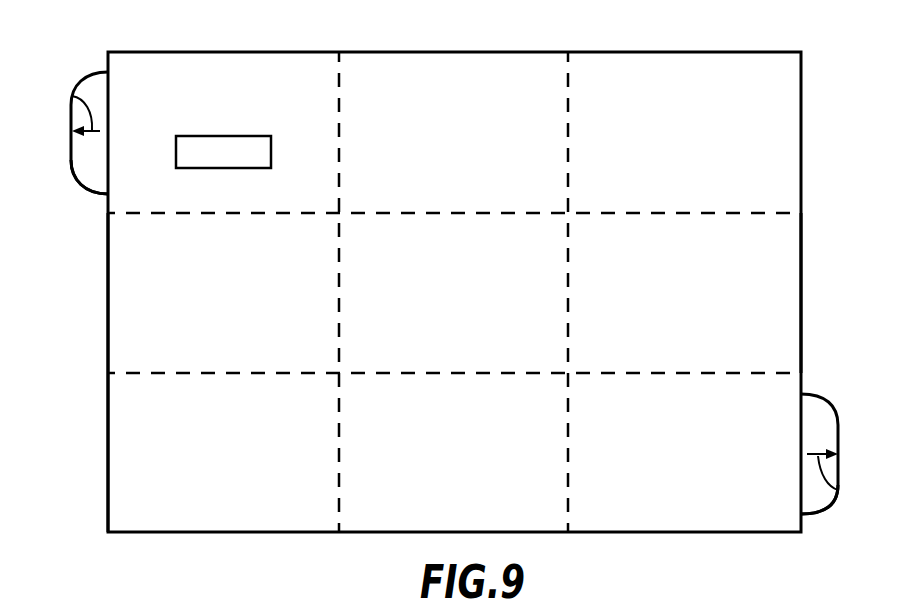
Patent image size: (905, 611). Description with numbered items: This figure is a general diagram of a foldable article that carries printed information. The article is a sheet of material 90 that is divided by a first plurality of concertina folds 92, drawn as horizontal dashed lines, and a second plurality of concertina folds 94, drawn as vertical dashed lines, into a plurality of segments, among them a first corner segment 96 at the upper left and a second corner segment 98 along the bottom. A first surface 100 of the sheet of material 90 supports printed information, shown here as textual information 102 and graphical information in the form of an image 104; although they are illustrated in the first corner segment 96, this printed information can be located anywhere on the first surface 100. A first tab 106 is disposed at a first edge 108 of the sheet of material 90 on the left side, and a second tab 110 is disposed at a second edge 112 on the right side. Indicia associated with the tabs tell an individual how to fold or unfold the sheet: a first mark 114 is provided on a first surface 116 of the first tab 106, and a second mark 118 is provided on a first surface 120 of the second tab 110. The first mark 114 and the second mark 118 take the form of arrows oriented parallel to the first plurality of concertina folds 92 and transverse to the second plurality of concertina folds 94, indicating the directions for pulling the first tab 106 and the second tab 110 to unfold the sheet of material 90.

The sheet of material 90 is at (758, 52).
The first plurality of concertina folds 92 is at (778, 213).
The second plurality of concertina folds 94 is at (339, 76).
The first corner segment 96 is at (302, 73).
The second corner segment 98 is at (655, 512).
The first surface 100 is at (123, 305).
The textual information 102 is at (158, 72).
The image 104 is at (255, 136).
The first tab 106 is at (82, 82).
The first edge 108 is at (108, 441).
The second tab 110 is at (838, 417).
The second edge 112 is at (801, 270).
The first mark 114 is at (72, 96).
The first surface of the first tab 116 is at (84, 168).
The second mark 118 is at (838, 487).
The first surface of the second tab 120 is at (818, 497).